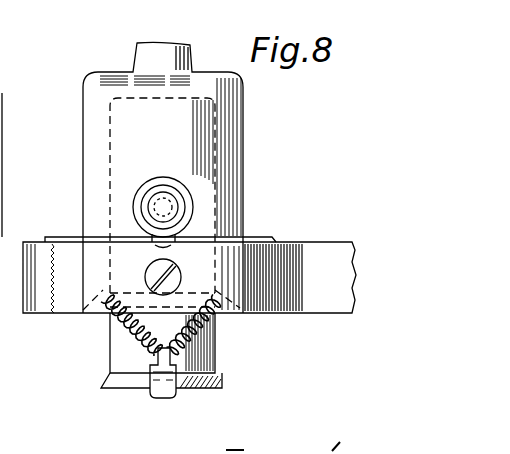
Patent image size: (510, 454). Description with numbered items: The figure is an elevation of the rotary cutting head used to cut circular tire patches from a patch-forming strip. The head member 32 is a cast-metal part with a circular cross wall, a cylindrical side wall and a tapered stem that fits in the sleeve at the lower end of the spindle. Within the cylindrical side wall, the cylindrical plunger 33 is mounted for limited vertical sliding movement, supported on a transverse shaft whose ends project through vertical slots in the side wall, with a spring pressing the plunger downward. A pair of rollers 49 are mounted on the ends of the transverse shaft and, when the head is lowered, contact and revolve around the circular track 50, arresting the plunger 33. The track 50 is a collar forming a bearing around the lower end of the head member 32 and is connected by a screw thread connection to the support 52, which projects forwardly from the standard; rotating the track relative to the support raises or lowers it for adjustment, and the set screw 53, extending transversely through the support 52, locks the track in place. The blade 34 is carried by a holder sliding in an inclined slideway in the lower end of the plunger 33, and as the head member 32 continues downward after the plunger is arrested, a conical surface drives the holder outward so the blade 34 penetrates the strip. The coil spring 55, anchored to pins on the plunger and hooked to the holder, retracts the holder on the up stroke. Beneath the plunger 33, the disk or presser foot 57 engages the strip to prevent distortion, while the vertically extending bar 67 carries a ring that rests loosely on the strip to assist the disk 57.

The vertically extending bar 67 is at (2, 128).
The head member 32 is at (243, 121).
The rollers 49 is at (187, 207).
The circular track 50 is at (53, 237).
The support 52 is at (37, 315).
The set screw 53 is at (174, 270).
The cylindrical plunger 33 is at (216, 370).
The coil spring 55 is at (215, 340).
The blade 34 is at (163, 393).
The disk or presser foot 57 is at (200, 388).